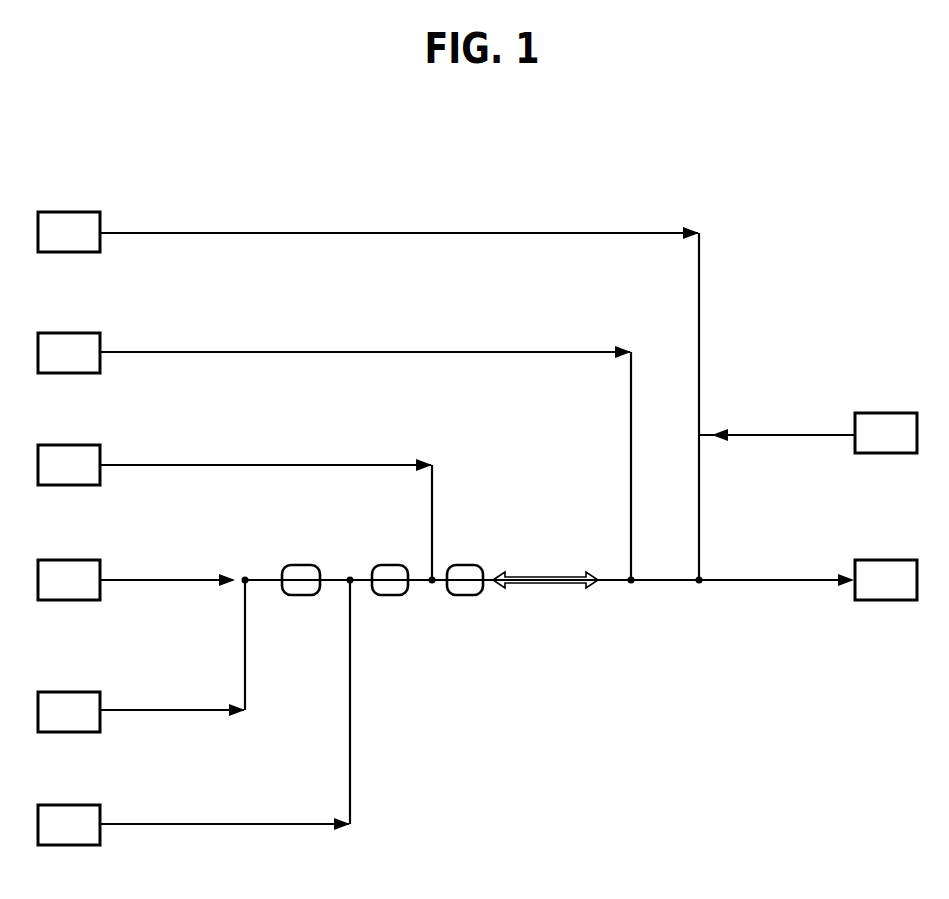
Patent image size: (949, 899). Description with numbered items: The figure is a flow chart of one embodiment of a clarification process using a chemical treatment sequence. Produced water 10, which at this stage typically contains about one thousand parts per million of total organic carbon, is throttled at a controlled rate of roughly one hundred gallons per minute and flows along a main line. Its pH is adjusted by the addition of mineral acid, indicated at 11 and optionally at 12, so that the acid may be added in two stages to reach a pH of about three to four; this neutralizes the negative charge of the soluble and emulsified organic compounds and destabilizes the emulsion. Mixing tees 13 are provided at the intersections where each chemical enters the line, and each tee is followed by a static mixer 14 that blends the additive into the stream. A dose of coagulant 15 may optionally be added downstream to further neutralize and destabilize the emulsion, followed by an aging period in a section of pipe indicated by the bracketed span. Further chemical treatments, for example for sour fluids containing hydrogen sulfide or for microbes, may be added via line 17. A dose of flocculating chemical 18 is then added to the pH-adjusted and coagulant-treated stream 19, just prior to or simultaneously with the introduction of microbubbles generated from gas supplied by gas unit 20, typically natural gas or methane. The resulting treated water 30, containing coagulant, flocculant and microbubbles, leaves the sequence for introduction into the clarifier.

The produced water 10 is at (136, 580).
The mineral acid addition 11 is at (141, 656).
The optional mineral acid addition 12 is at (194, 712).
The mixing tee 13 is at (245, 566).
The static mixer 14 is at (295, 600).
The coagulant 15 is at (588, 593).
The line for further chemical treatment 17 is at (334, 456).
The flocculating chemical 18 is at (368, 396).
The treatment stream 19 is at (666, 578).
The gas unit 20 is at (808, 433).
The treated water 30 is at (581, 580).